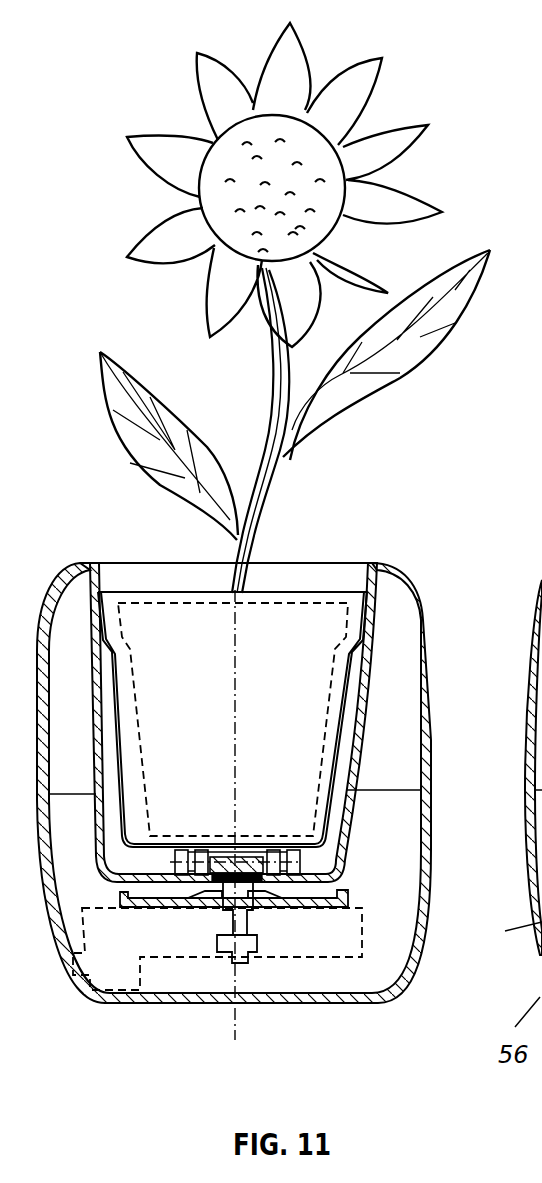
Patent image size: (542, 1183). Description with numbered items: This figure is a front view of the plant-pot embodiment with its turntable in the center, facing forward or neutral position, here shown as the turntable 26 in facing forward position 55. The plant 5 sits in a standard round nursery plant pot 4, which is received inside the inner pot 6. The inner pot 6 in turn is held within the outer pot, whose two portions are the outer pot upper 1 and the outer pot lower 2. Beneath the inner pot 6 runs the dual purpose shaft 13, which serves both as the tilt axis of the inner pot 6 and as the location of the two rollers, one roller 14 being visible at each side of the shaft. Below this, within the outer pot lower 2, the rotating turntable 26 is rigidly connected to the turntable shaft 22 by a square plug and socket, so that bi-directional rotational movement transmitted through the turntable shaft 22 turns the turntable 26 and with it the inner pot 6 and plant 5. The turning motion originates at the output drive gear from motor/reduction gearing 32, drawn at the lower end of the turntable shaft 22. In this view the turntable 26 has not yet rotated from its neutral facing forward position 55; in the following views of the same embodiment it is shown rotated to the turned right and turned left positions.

The outer pot upper 1 is at (396, 567).
The outer pot lower 2 is at (431, 867).
The standard round nursery plant pot 4 is at (278, 603).
The plant 5 is at (413, 197).
The inner pot 6 is at (160, 593).
The dual purpose shaft 13 is at (300, 863).
The roller 14 is at (282, 857).
The turntable shaft 22 is at (249, 923).
The turntable 26 is at (358, 905).
The output drive gear from motor/reduction gearing 32 is at (217, 952).
The turntable in facing forward position 55 is at (163, 908).